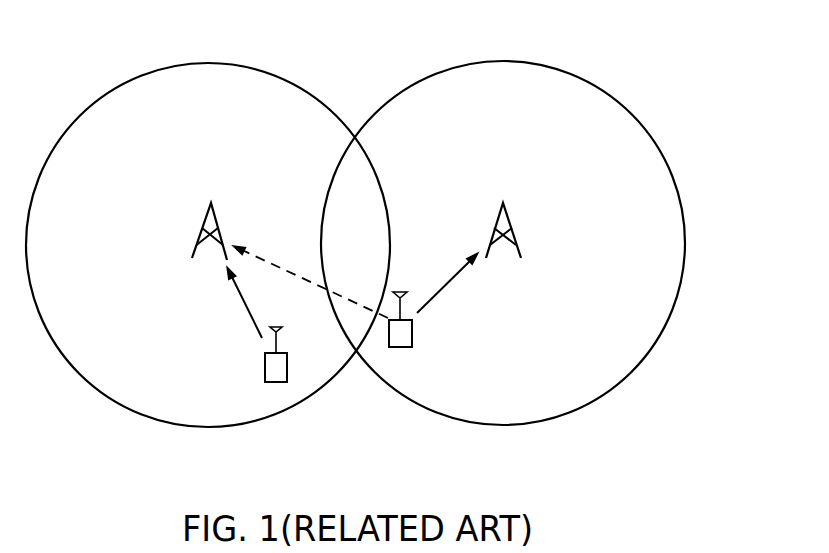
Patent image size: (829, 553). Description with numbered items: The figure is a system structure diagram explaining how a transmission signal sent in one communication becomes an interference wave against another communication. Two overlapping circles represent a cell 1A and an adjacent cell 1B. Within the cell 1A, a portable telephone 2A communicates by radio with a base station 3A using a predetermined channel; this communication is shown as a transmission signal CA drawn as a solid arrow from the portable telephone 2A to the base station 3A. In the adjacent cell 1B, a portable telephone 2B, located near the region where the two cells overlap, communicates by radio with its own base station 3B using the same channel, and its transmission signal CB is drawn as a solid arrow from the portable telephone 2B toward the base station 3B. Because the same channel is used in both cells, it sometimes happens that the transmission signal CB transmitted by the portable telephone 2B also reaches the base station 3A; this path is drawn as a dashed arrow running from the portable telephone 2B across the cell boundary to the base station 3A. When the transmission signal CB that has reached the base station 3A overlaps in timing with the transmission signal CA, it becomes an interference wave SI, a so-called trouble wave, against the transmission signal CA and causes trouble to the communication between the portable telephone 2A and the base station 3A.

The cell 1A is at (210, 62).
The adjacent cell 1B is at (532, 62).
The portable telephone 2A is at (265, 366).
The portable telephone 2B is at (400, 347).
The base station 3A is at (206, 213).
The base station 3B is at (508, 213).
The transmission signal CA is at (242, 303).
The transmission signal CB is at (448, 285).
The interference wave SI is at (292, 272).